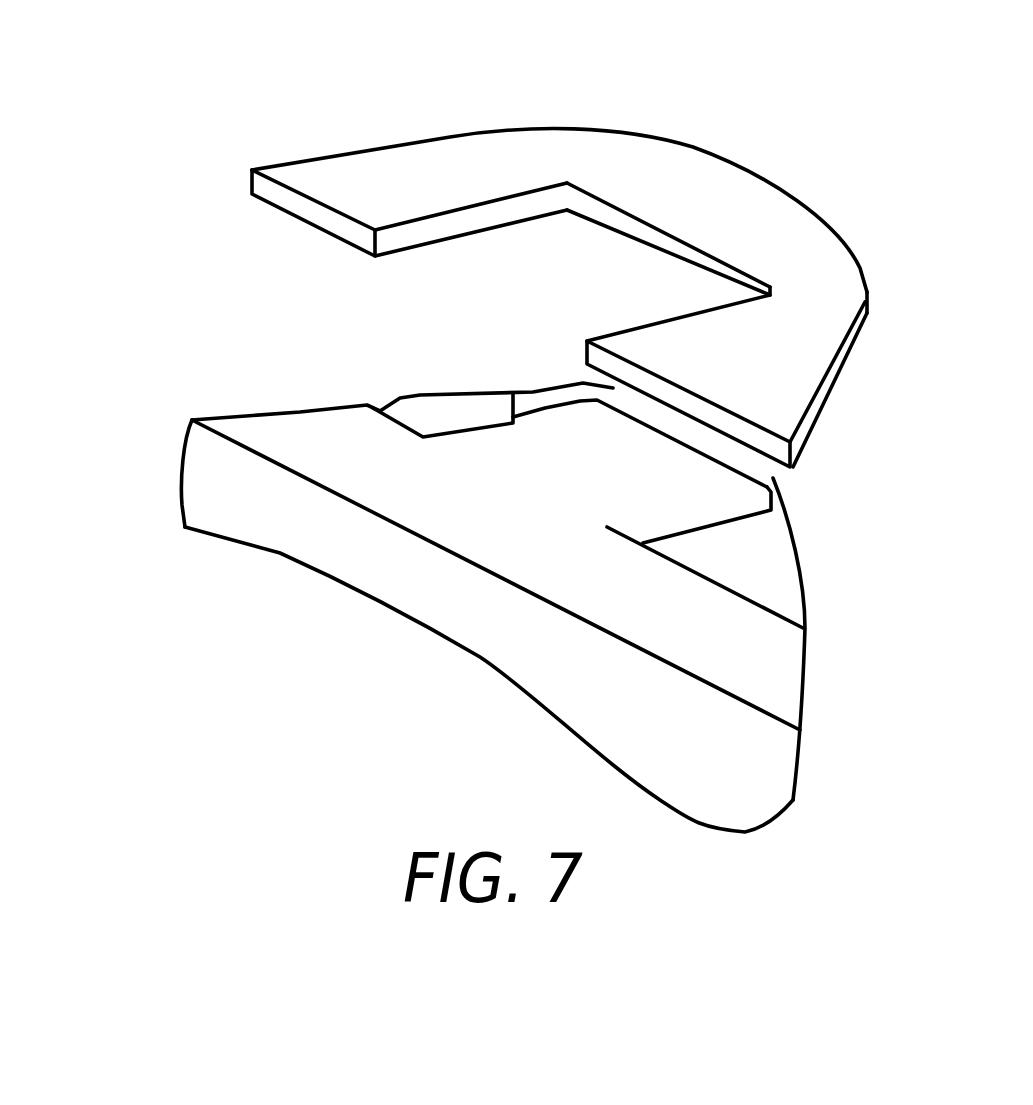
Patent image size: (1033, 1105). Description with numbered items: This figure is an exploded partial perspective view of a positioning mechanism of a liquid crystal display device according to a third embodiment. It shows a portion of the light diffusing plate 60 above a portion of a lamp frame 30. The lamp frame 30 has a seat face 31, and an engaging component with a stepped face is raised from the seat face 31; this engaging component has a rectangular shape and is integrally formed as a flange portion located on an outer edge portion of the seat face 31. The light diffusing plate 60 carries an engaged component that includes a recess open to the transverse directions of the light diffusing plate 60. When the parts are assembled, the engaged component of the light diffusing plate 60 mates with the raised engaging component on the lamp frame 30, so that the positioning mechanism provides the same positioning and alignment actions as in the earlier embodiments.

The light diffusing plate 60 is at (402, 165).
The lamp frame 30 is at (183, 494).
The seat face 31 is at (457, 413).